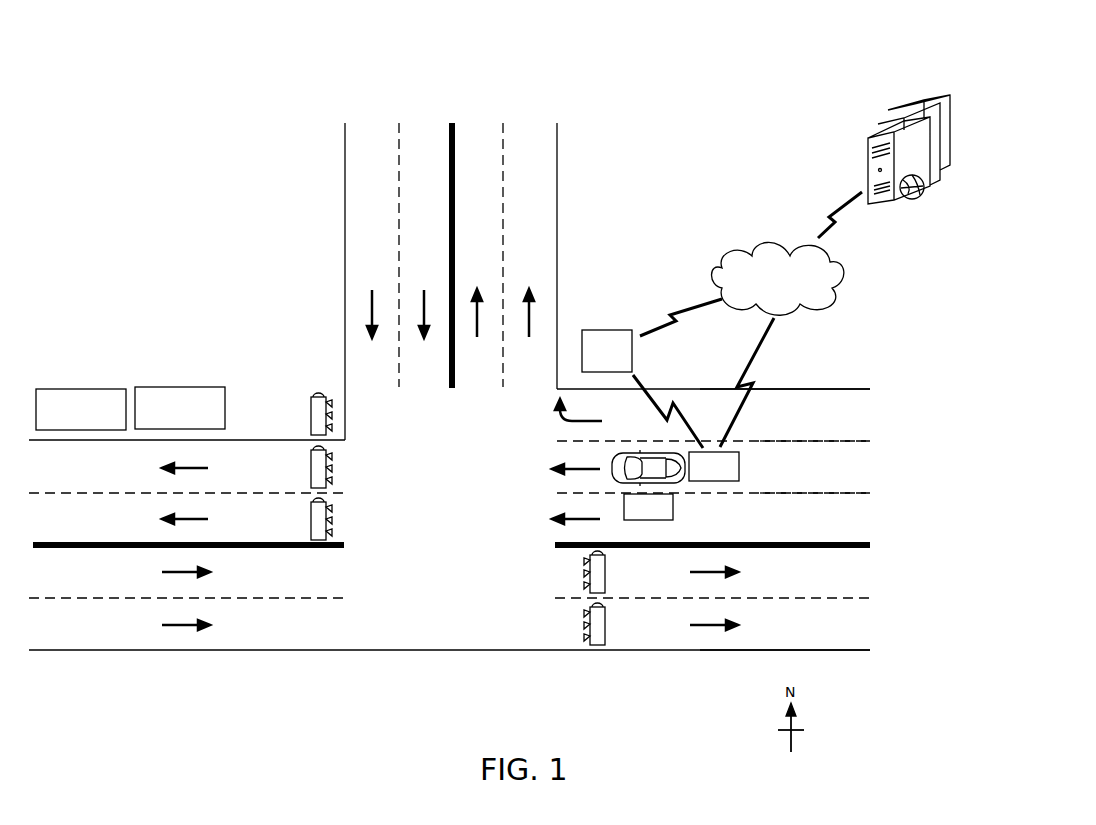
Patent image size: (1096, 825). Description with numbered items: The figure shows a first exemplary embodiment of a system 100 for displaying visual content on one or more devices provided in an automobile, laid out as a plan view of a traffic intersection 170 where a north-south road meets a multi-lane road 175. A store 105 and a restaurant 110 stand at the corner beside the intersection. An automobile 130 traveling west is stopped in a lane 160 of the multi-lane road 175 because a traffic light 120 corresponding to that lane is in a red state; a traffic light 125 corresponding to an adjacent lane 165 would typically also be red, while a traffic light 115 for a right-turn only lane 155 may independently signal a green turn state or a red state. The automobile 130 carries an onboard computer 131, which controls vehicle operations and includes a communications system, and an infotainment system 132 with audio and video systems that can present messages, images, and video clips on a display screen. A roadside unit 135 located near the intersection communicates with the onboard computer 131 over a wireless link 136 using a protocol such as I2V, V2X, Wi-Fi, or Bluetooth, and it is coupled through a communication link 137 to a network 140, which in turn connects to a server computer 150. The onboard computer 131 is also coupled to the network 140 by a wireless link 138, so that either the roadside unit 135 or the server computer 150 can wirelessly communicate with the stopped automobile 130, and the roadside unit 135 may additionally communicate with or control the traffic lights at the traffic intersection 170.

The system 100 is at (668, 177).
The store 105 is at (88, 389).
The restaurant 110 is at (182, 387).
The traffic light 115 is at (311, 414).
The traffic light 120 is at (311, 472).
The traffic light 125 is at (311, 525).
The automobile 130 is at (613, 468).
The onboard computer 131 is at (714, 466).
The infotainment system 132 is at (648, 507).
The roadside unit 135 is at (607, 351).
The wireless link 136 is at (693, 426).
The communication link 137 is at (673, 330).
The wireless link 138 is at (758, 372).
The network 140 is at (778, 278).
The server computer 150 is at (862, 155).
The right-turn only lane 155 is at (785, 405).
The lane 160 is at (815, 455).
The adjacent lane 165 is at (815, 507).
The traffic intersection 170 is at (449, 386).
The multi-lane road 175 is at (871, 672).